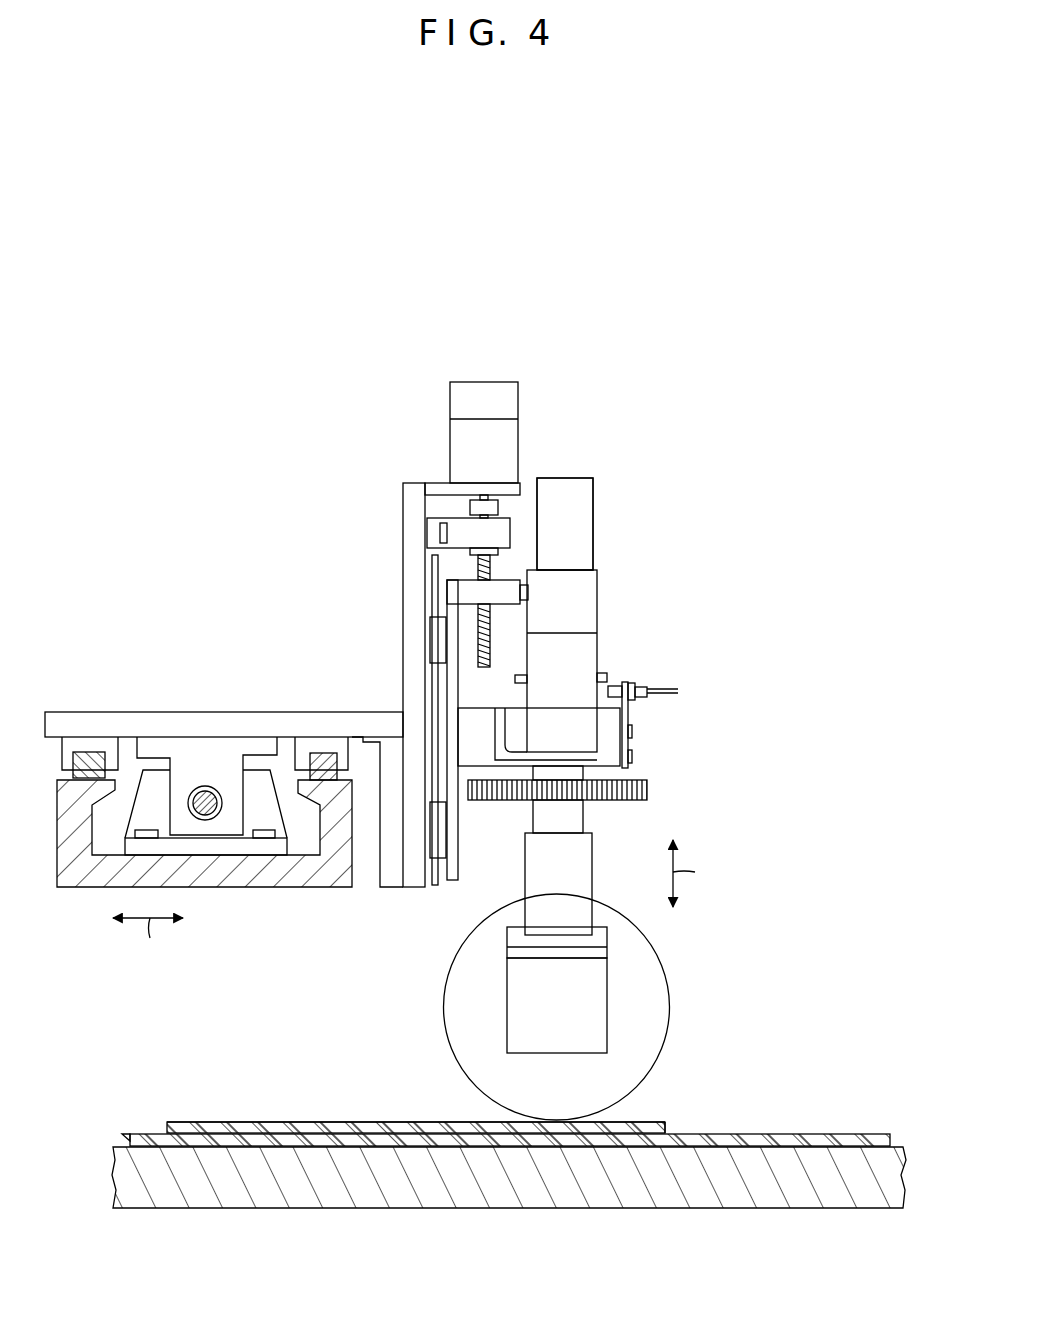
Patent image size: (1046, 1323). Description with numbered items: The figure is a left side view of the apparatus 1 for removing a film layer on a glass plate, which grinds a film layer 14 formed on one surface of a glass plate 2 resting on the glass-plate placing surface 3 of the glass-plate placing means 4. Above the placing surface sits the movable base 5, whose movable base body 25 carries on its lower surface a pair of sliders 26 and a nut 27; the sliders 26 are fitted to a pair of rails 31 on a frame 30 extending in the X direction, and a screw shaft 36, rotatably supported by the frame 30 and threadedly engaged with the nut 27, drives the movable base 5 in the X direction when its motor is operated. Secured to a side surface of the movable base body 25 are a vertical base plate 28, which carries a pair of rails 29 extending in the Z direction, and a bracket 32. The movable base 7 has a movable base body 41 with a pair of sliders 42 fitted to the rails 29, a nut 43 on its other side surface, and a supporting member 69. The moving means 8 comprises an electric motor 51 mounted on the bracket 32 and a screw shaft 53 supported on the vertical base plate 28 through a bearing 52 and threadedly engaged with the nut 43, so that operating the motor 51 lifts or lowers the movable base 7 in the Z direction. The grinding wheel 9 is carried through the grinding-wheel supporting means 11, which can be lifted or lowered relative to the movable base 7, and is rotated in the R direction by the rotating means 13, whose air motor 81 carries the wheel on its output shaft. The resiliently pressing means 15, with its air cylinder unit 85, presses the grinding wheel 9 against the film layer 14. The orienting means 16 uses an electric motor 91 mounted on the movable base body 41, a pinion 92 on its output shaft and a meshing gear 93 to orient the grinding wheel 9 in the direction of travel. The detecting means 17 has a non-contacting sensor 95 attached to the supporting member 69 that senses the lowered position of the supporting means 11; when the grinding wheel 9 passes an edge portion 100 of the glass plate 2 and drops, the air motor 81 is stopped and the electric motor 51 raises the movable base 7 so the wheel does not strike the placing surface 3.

The apparatus for removing a film layer on a glass plate 1 is at (367, 751).
The glass plate 2 is at (345, 1127).
The glass-plate placing surface 3 is at (262, 1133).
The glass-plate placing means 4 is at (851, 1130).
The movable base 5 is at (209, 803).
The movable base 7 is at (440, 708).
The moving means 8 is at (463, 525).
The grinding wheel 9 is at (579, 1007).
The grinding-wheel supporting means 11 is at (585, 850).
The rotating means 13 is at (614, 1043).
The film layer 14 is at (385, 1124).
The resiliently pressing means 15 is at (600, 541).
The orienting means 16 is at (594, 661).
The detecting means 17 is at (580, 718).
The movable base body 25 is at (128, 730).
The sliders 26 is at (82, 745).
The nut 27 is at (200, 750).
The vertical base plate 28 is at (414, 558).
The rails 29 is at (434, 589).
The frame 30 is at (90, 875).
The rails 31 is at (73, 793).
The bracket 32 is at (497, 490).
The screw shaft 36 is at (205, 822).
The movable base body 41 is at (456, 834).
The sliders 42 is at (440, 637).
The nut 43 is at (476, 597).
The electric motor 51 is at (503, 403).
The bearing 52 is at (470, 532).
The screw shaft 53 is at (477, 646).
The supporting member 69 is at (613, 746).
The air motor 81 is at (583, 970).
The air cylinder unit 85 is at (583, 494).
The electric motor 91 is at (568, 643).
The pinion 92 is at (553, 790).
The gear 93 is at (648, 791).
The non-contacting sensor 95 is at (628, 684).
The edge portion 100 is at (666, 1126).